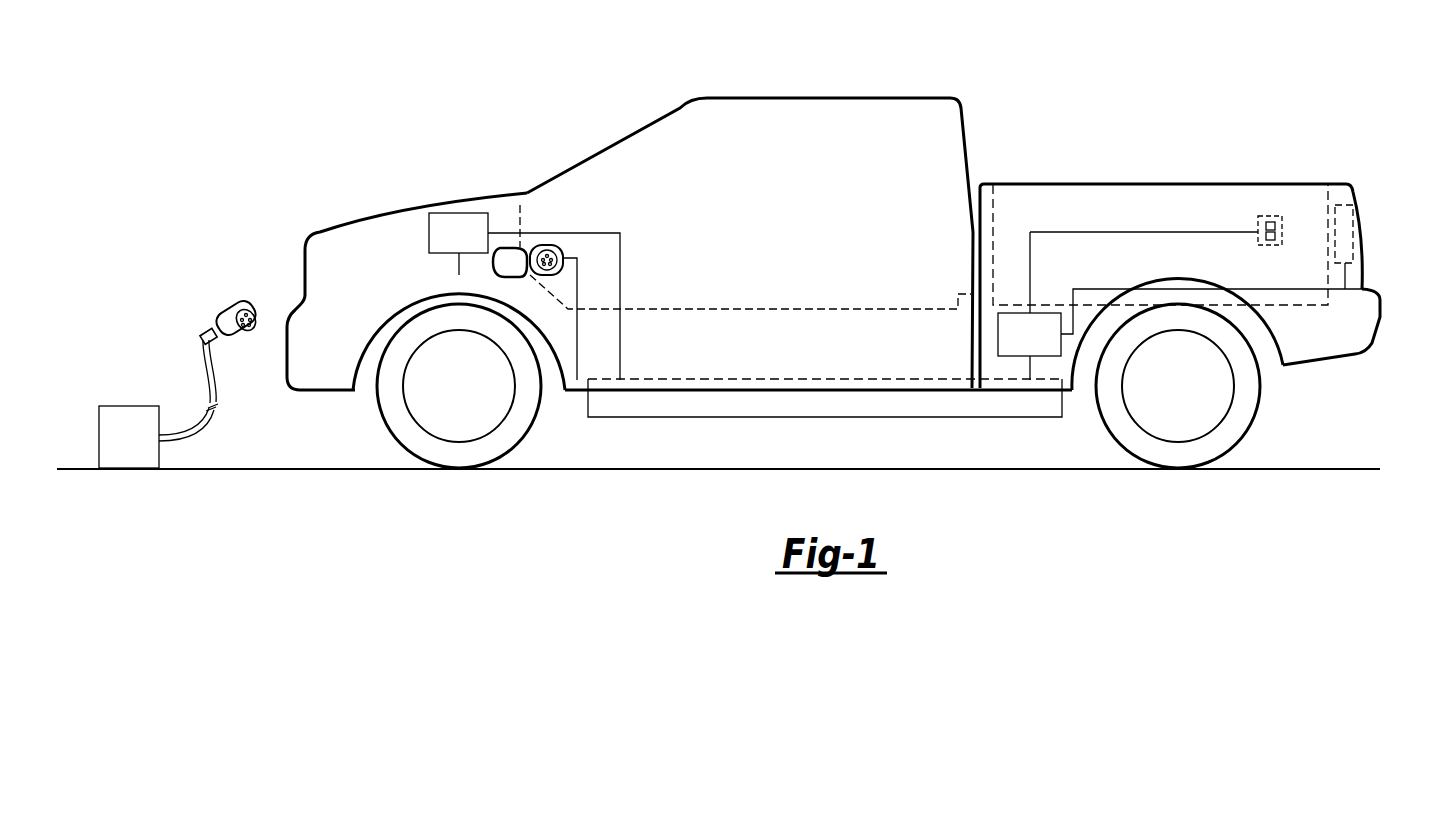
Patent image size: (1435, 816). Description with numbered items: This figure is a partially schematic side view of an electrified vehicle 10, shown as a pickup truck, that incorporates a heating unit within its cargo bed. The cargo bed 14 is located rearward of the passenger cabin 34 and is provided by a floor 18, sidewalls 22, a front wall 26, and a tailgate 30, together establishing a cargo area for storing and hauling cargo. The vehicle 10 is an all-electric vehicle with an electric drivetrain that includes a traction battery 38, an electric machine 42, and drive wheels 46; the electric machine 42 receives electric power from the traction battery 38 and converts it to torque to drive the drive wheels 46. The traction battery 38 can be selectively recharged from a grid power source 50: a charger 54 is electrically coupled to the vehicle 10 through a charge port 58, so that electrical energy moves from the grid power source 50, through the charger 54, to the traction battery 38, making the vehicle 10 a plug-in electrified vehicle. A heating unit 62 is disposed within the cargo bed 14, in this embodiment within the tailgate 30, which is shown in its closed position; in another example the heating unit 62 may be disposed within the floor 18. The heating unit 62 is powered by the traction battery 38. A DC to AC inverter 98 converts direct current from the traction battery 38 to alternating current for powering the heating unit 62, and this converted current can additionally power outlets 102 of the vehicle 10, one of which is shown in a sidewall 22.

The vehicle 10 is at (1000, 78).
The cargo bed 14 is at (1145, 147).
The floor 18 is at (1290, 303).
The sidewalls 22 is at (1222, 183).
The front wall 26 is at (1000, 202).
The tailgate 30 is at (1354, 191).
The passenger cabin 34 is at (812, 120).
The traction battery 38 is at (638, 417).
The electric machine 42 is at (460, 213).
The drive wheels 46 is at (380, 418).
The grid power source 50 is at (131, 407).
The charger 54 is at (197, 350).
The charge port 58 is at (565, 253).
The heating unit 62 is at (1355, 241).
The DC to AC inverter 98 is at (998, 333).
The outlets 102 is at (1283, 223).